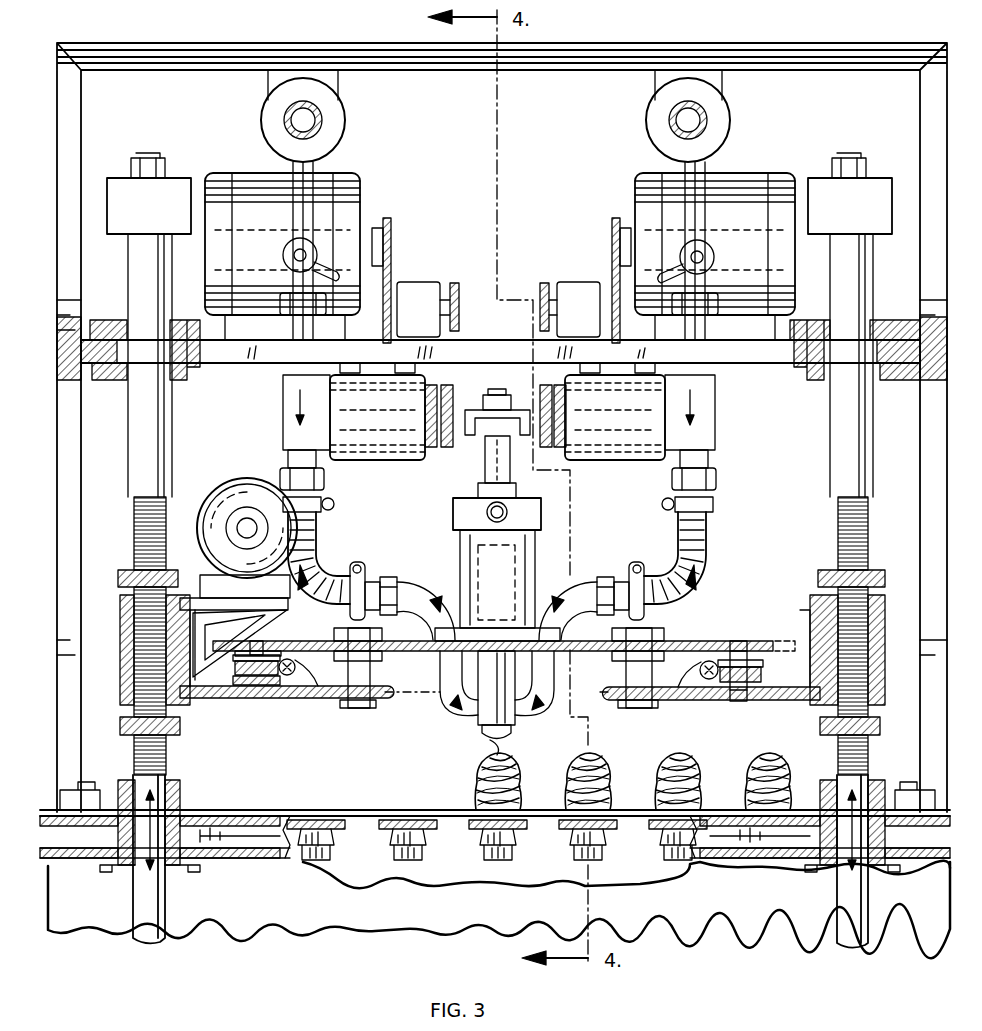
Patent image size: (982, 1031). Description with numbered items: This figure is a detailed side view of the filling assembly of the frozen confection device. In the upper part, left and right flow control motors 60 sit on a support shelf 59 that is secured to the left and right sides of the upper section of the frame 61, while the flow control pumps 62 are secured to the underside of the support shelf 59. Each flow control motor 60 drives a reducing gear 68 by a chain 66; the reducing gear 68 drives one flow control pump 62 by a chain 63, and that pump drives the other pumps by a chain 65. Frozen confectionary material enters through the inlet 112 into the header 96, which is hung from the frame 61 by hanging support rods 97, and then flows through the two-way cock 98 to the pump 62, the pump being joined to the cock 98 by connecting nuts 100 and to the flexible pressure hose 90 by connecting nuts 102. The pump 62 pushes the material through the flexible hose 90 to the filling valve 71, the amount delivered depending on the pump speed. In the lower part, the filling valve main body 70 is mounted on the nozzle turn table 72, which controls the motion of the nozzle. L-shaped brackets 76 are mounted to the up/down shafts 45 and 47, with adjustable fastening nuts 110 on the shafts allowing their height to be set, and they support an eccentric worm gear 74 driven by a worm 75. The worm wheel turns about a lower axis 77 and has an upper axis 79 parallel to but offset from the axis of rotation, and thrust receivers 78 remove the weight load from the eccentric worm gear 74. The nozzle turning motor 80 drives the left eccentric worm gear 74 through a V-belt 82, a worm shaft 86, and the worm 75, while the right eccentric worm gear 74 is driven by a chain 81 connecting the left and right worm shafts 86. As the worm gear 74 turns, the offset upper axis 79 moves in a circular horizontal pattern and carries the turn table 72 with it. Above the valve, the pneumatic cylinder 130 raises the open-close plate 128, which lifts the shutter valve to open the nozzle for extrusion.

The up/down shaft 45 is at (870, 905).
The up/down shaft 47 is at (135, 905).
The support shelf 59 is at (240, 364).
The flow control motor 60 is at (345, 172).
The frame 61 is at (170, 52).
The flow control pump 62 is at (376, 450).
The chain 63 is at (520, 345).
The chain 65 is at (448, 460).
The chain 66 is at (387, 280).
The reducing gear 68 is at (420, 285).
The filling valve main body 70 is at (487, 672).
The filling valve 71 is at (530, 735).
The nozzle turn table 72 is at (428, 600).
The eccentric worm gear 74 is at (238, 686).
The worm 75 is at (320, 698).
The L-shaped bracket 76 is at (210, 698).
The lower axis 77 is at (260, 686).
The thrust receiver 78 is at (382, 665).
The upper axis 79 is at (252, 641).
The nozzle turning motor 80 is at (252, 478).
The chain 81 is at (420, 695).
The V-belt 82 is at (203, 480).
The worm shaft 86 is at (292, 676).
The flexible pressure hose 90 is at (318, 530).
The header 96 is at (268, 105).
The hanging support rod 97 is at (350, 80).
The 2-way cock 98 is at (708, 245).
The connecting nut 100 is at (290, 300).
The connecting nut 102 is at (322, 485).
The adjustable fastening nut 110 is at (128, 575).
The inlet 112 is at (303, 108).
The open-close plate 128 is at (470, 410).
The pneumatic cylinder 130 is at (452, 520).